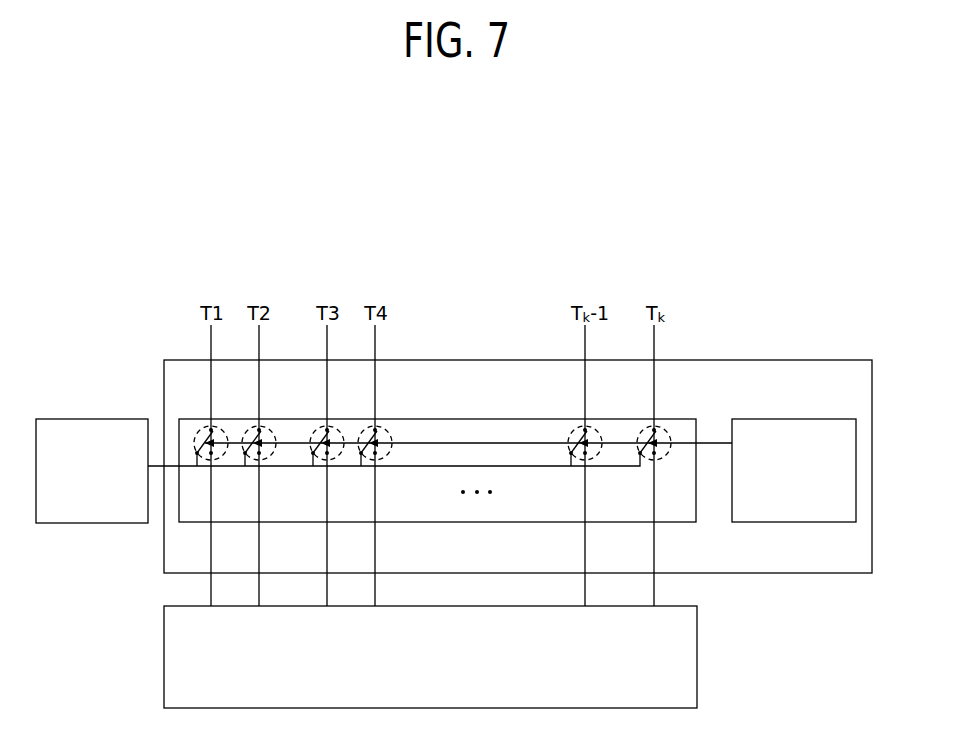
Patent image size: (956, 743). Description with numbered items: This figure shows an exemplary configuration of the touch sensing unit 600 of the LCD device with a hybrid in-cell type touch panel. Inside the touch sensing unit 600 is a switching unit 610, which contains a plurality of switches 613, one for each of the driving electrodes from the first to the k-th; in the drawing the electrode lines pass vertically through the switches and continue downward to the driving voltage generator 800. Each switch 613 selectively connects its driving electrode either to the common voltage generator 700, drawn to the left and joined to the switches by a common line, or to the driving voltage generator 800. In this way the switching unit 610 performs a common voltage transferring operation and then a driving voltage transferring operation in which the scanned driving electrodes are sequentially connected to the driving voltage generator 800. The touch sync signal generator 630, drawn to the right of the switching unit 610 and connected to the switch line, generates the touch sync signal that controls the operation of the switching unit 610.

The touch sensing unit 600 is at (773, 360).
The switching unit 610 is at (678, 419).
The switch 613 is at (200, 432).
The touch sync signal generator 630 is at (778, 481).
The common voltage generator 700 is at (75, 481).
The driving voltage generator 800 is at (414, 666).